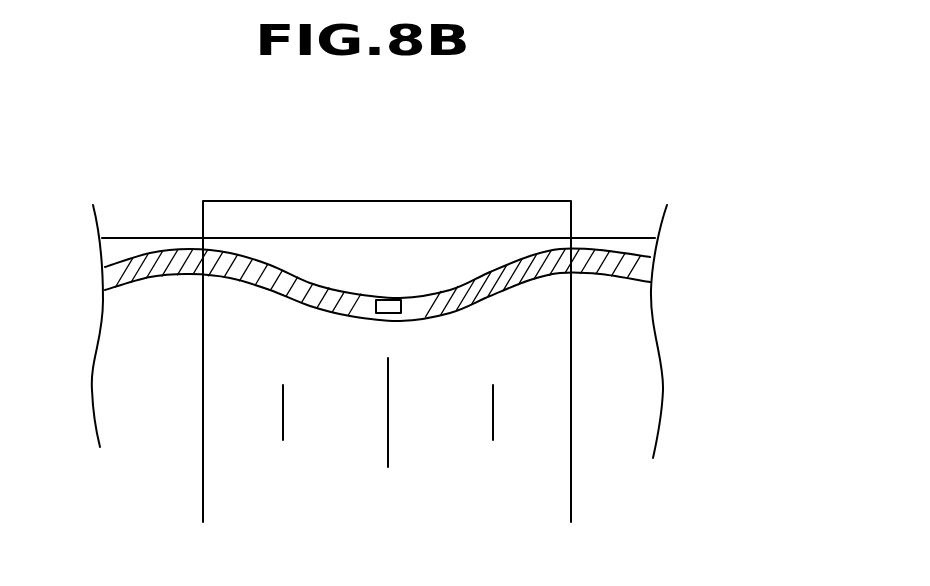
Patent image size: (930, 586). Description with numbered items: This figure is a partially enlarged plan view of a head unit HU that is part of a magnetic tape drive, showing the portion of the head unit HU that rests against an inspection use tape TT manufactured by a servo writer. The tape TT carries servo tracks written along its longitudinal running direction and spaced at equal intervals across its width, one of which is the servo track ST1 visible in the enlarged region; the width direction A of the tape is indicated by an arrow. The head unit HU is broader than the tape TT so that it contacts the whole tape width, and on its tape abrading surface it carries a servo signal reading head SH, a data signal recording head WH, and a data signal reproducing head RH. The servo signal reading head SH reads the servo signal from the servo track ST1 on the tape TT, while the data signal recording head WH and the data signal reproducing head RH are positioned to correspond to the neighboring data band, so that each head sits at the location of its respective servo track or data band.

The inspection use tape TT is at (626, 229).
The servo track ST1 is at (148, 268).
The head unit HU is at (402, 196).
The servo signal reading head SH is at (393, 316).
The data signal recording head WH is at (283, 412).
The data signal reproducing head RH is at (388, 412).
The width direction A is at (243, 160).